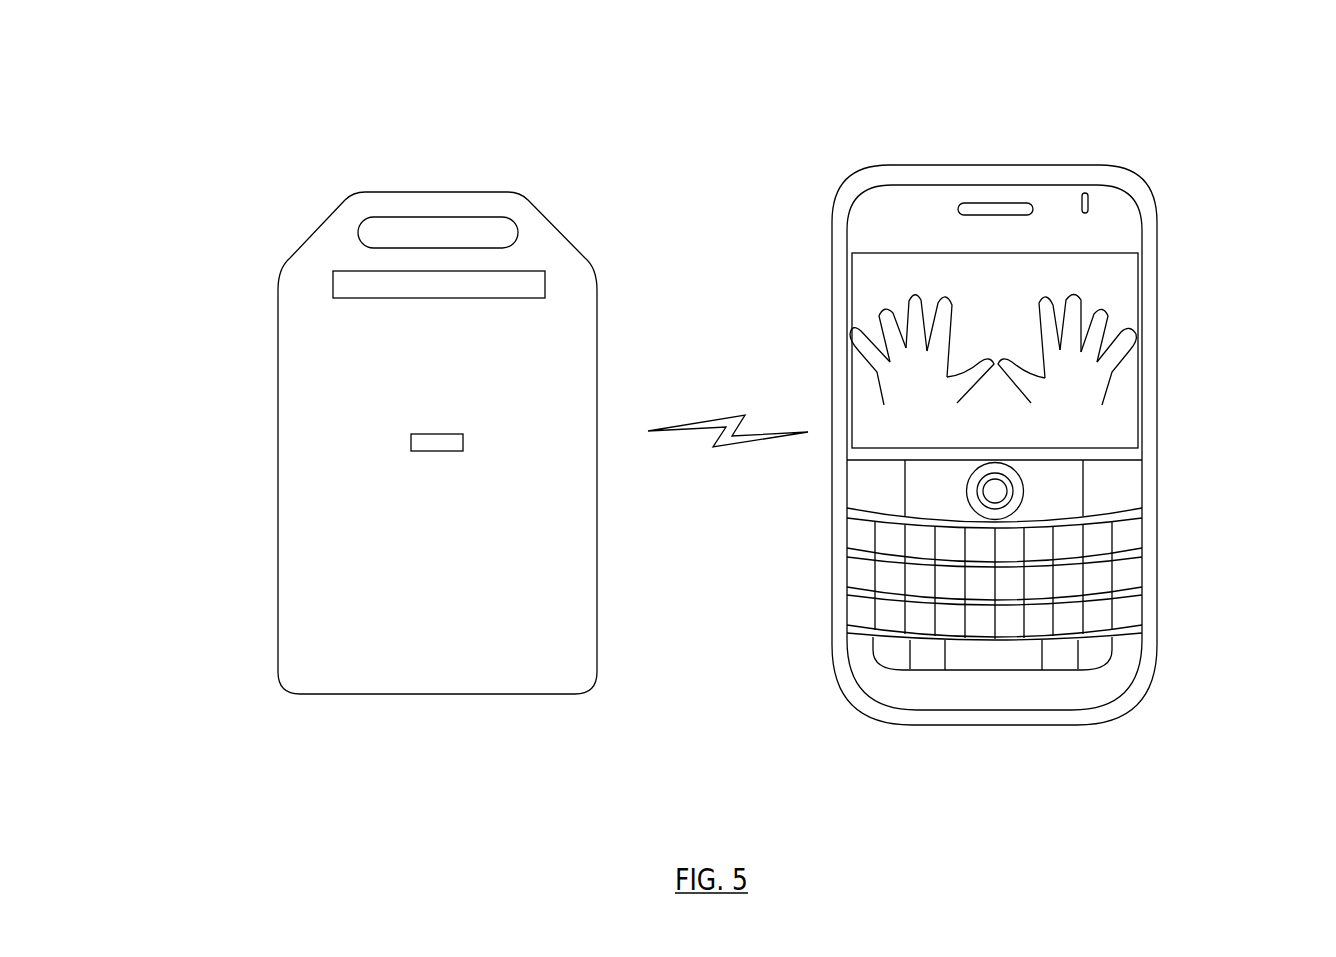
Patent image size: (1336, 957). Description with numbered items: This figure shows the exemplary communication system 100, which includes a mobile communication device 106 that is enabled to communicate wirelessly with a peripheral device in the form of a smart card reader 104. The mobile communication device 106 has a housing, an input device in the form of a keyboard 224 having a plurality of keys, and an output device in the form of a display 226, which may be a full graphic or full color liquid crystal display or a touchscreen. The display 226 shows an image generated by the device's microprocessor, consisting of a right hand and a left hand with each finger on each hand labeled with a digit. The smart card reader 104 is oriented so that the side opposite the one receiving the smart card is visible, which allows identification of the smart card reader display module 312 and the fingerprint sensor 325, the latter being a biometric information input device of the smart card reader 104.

The communication system 100 is at (186, 105).
The smart card reader 104 is at (576, 685).
The mobile communication device 106 is at (852, 187).
The keyboard 224 is at (1163, 652).
The display 226 is at (1163, 437).
The display module 312 is at (388, 298).
The fingerprint sensor 325 is at (410, 452).